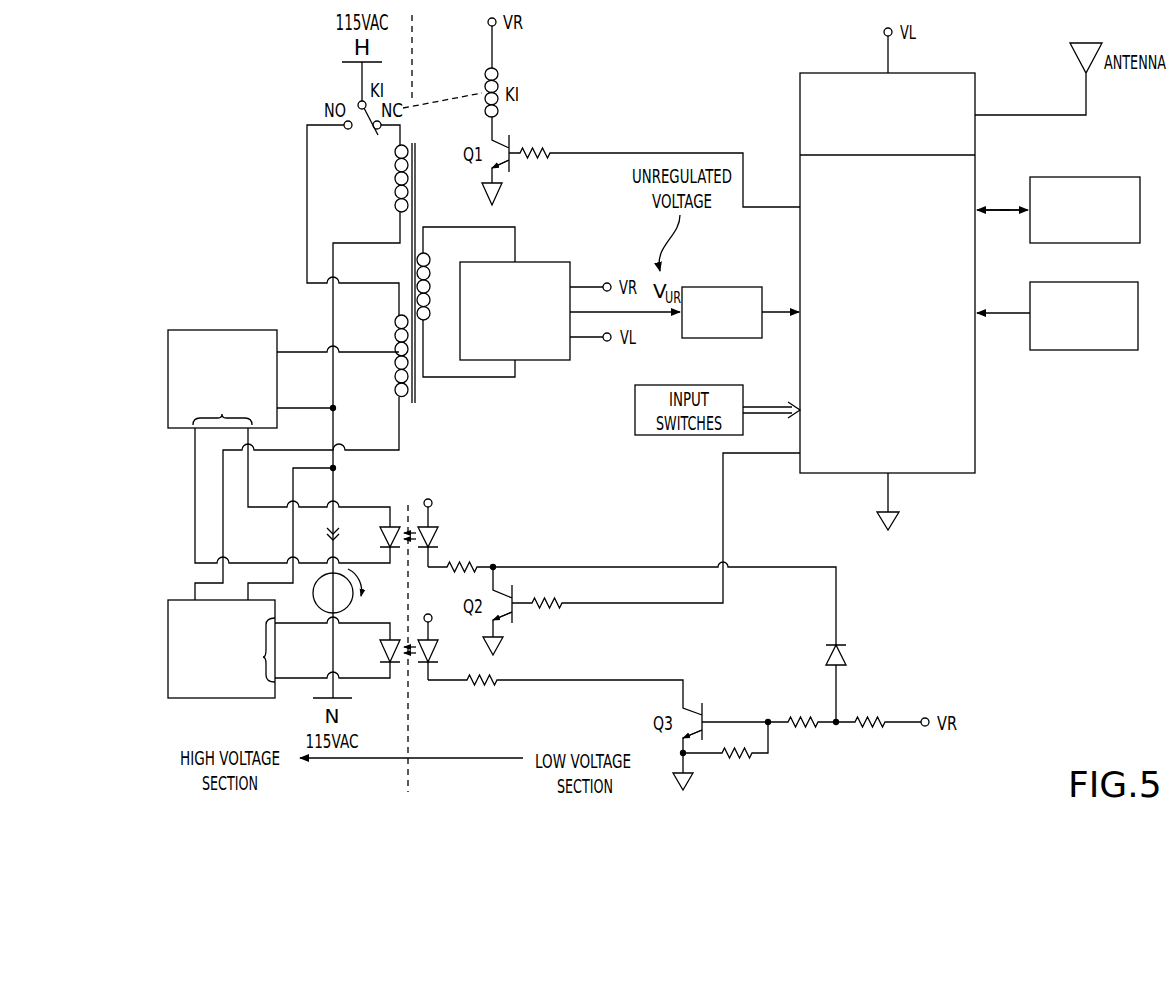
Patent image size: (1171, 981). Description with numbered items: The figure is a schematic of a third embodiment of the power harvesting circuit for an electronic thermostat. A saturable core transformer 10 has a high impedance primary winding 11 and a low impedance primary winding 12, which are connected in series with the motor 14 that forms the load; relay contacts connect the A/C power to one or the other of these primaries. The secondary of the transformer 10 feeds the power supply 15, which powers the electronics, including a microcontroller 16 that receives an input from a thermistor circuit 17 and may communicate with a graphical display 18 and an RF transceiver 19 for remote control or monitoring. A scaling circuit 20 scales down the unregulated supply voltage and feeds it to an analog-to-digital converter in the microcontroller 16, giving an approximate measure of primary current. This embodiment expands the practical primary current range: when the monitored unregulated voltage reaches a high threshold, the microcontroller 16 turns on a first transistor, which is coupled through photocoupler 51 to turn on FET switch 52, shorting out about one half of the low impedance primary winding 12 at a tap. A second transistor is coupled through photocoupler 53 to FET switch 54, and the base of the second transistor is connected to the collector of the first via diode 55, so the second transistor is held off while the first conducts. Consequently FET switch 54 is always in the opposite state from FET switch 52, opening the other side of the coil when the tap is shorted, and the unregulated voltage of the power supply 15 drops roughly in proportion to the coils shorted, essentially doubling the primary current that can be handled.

The saturable core transformer 10 is at (429, 300).
The high impedance primary winding 11 is at (395, 188).
The low impedance primary winding 12 is at (395, 383).
The motor 14 is at (319, 579).
The power supply 15 is at (547, 262).
The microcontroller 16 is at (800, 332).
The thermistor circuit 17 is at (1082, 350).
The graphical display 18 is at (1085, 177).
The RF transceiver 19 is at (800, 103).
The scaling circuit 20 is at (722, 287).
The photocoupler 51 is at (440, 535).
The FET switch 52 is at (223, 330).
The photocoupler 53 is at (437, 653).
The FET switch 54 is at (222, 698).
The diode 55 is at (826, 651).